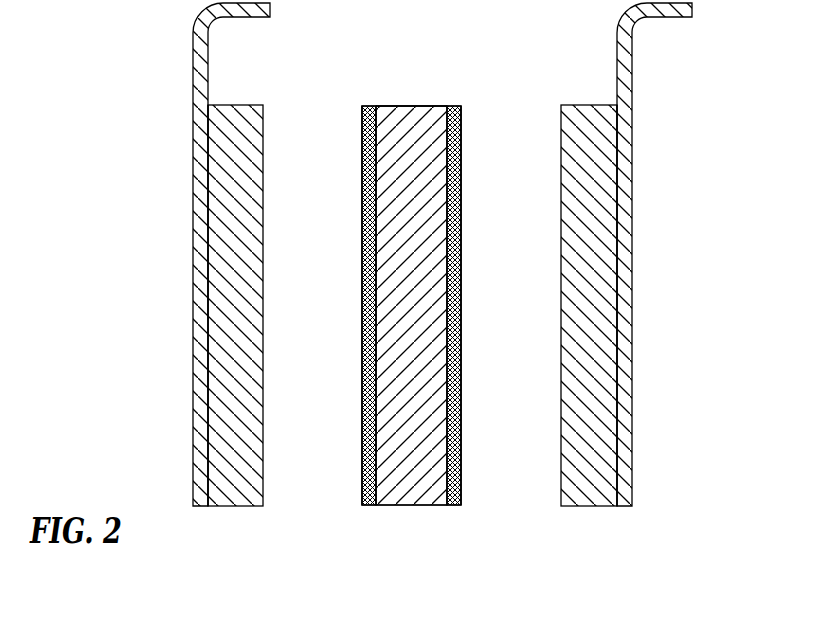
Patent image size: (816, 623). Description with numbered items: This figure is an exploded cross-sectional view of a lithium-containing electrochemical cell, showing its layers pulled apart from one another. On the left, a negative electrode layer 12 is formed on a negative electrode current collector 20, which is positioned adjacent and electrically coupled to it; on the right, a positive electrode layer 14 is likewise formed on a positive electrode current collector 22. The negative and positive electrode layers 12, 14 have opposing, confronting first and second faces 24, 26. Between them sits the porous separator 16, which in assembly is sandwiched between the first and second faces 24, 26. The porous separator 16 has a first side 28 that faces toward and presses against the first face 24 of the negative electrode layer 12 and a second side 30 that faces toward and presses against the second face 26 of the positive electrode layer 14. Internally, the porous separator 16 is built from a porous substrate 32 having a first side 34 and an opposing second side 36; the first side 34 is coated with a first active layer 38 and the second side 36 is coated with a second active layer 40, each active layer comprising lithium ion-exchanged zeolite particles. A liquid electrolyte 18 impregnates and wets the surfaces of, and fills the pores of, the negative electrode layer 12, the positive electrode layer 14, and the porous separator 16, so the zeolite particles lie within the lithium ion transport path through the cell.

The negative electrode layer 12 is at (215, 507).
The positive electrode layer 14 is at (600, 507).
The porous separator 16 is at (362, 512).
The liquid electrolyte 18 is at (420, 130).
The negative electrode current collector 20 is at (193, 215).
The positive electrode current collector 22 is at (632, 217).
The first face 24 is at (262, 281).
The second face 26 is at (562, 282).
The first side 28 is at (362, 360).
The second side 30 is at (461, 360).
The porous substrate 32 is at (398, 106).
The first side of the substrate 34 is at (374, 237).
The second side of the substrate 36 is at (449, 237).
The first active layer 38 is at (362, 147).
The second active layer 40 is at (461, 147).